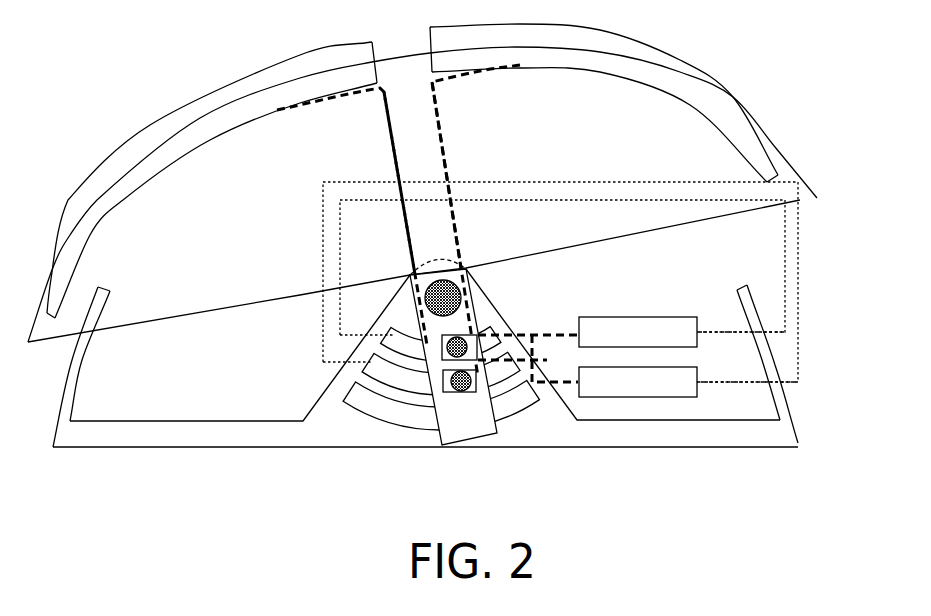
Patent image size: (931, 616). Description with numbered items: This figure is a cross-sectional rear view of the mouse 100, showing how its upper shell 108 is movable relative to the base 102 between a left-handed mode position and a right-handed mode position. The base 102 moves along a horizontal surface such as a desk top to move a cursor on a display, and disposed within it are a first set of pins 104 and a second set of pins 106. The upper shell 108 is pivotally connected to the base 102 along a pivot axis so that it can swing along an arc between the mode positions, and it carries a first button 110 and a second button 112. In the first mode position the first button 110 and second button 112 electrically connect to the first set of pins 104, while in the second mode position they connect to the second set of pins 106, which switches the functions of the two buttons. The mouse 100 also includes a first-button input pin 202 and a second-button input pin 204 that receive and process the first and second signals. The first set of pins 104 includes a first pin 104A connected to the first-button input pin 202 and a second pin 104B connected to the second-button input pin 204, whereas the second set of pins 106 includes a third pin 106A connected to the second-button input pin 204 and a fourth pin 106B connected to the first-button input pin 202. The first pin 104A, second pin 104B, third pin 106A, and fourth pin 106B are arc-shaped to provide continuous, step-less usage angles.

The mouse 100 is at (460, 284).
The base 102 is at (798, 414).
The first set of pins 104 is at (353, 357).
The first pin 104A is at (391, 327).
The second pin 104B is at (372, 354).
The second set of pins 106 is at (482, 263).
The third pin 106A is at (483, 331).
The fourth pin 106B is at (510, 355).
The upper shell 108 is at (786, 147).
The first button 110 is at (128, 137).
The second button 112 is at (652, 40).
The first-button input pin 202 is at (678, 316).
The second-button input pin 204 is at (694, 367).